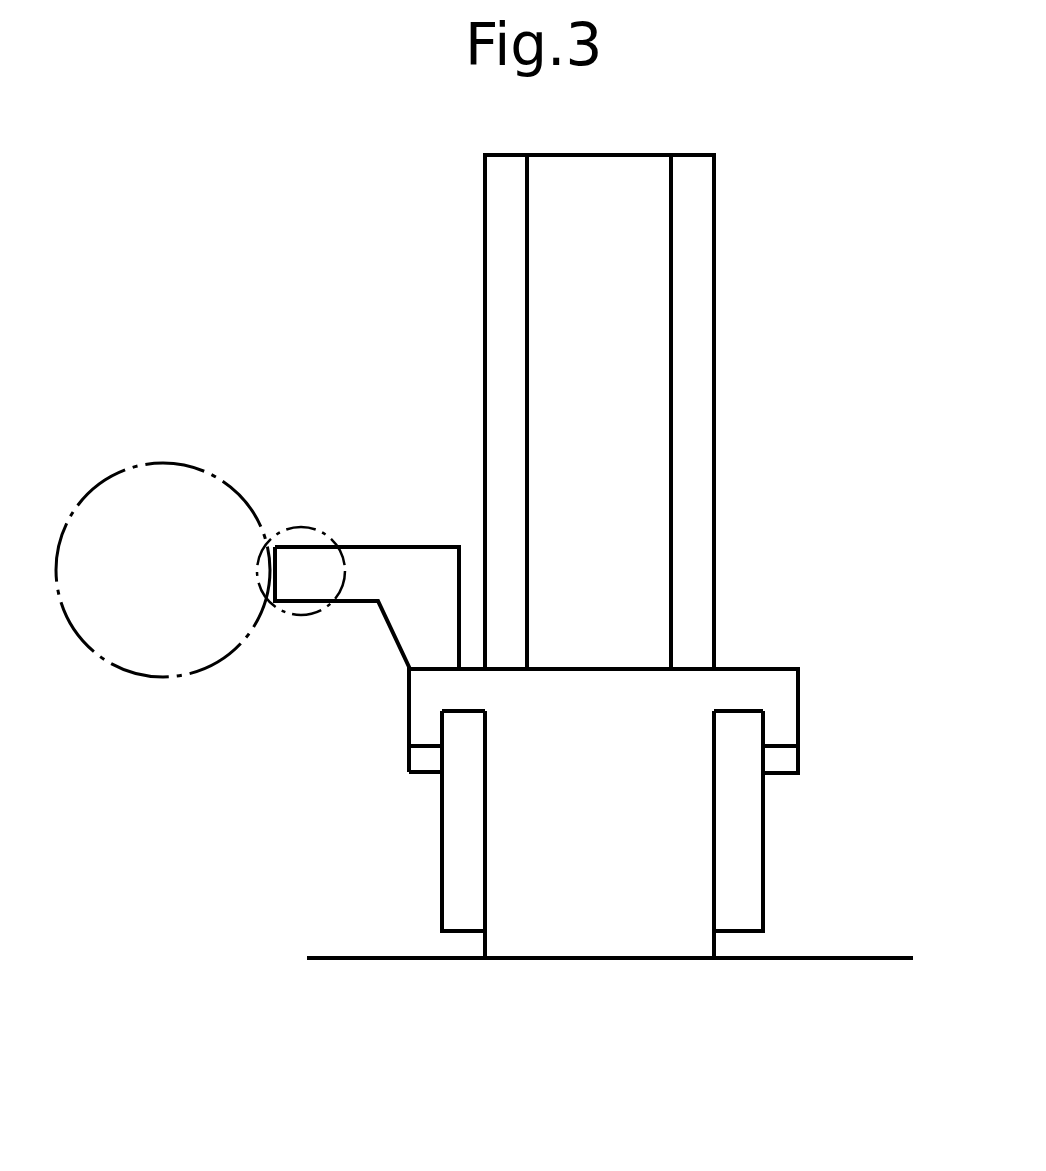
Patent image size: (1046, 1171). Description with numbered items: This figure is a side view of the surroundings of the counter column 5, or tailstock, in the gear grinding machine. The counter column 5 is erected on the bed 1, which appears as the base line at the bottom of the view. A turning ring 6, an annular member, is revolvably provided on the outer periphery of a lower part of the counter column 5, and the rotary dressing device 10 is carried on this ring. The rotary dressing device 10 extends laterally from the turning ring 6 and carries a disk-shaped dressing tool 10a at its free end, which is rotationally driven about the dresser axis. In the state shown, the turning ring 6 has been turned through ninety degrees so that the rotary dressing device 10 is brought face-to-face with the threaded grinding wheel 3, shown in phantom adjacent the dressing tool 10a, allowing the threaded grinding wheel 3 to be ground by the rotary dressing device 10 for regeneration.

The bed 1 is at (856, 978).
The threaded grinding wheel 3 is at (155, 640).
The counter column 5 is at (722, 332).
The turning ring 6 is at (732, 668).
The rotary dressing device 10 is at (395, 546).
The dressing tool 10a is at (300, 537).